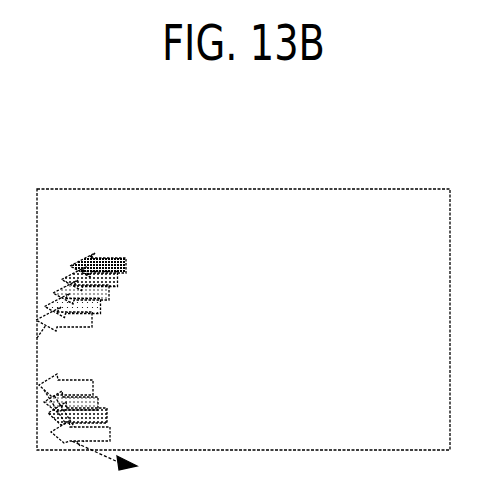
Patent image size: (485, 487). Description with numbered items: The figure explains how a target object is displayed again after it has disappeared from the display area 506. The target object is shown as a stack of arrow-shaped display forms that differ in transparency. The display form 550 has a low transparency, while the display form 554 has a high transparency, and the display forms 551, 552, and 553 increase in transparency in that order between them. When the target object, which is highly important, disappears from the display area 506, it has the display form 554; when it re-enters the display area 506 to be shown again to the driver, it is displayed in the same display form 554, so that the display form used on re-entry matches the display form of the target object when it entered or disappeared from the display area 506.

The display area 506 is at (243, 188).
The display form 550 is at (127, 268).
The display form 551 is at (118, 279).
The display form 552 is at (109, 291).
The display form 553 is at (101, 305).
The display form 554 is at (94, 321).